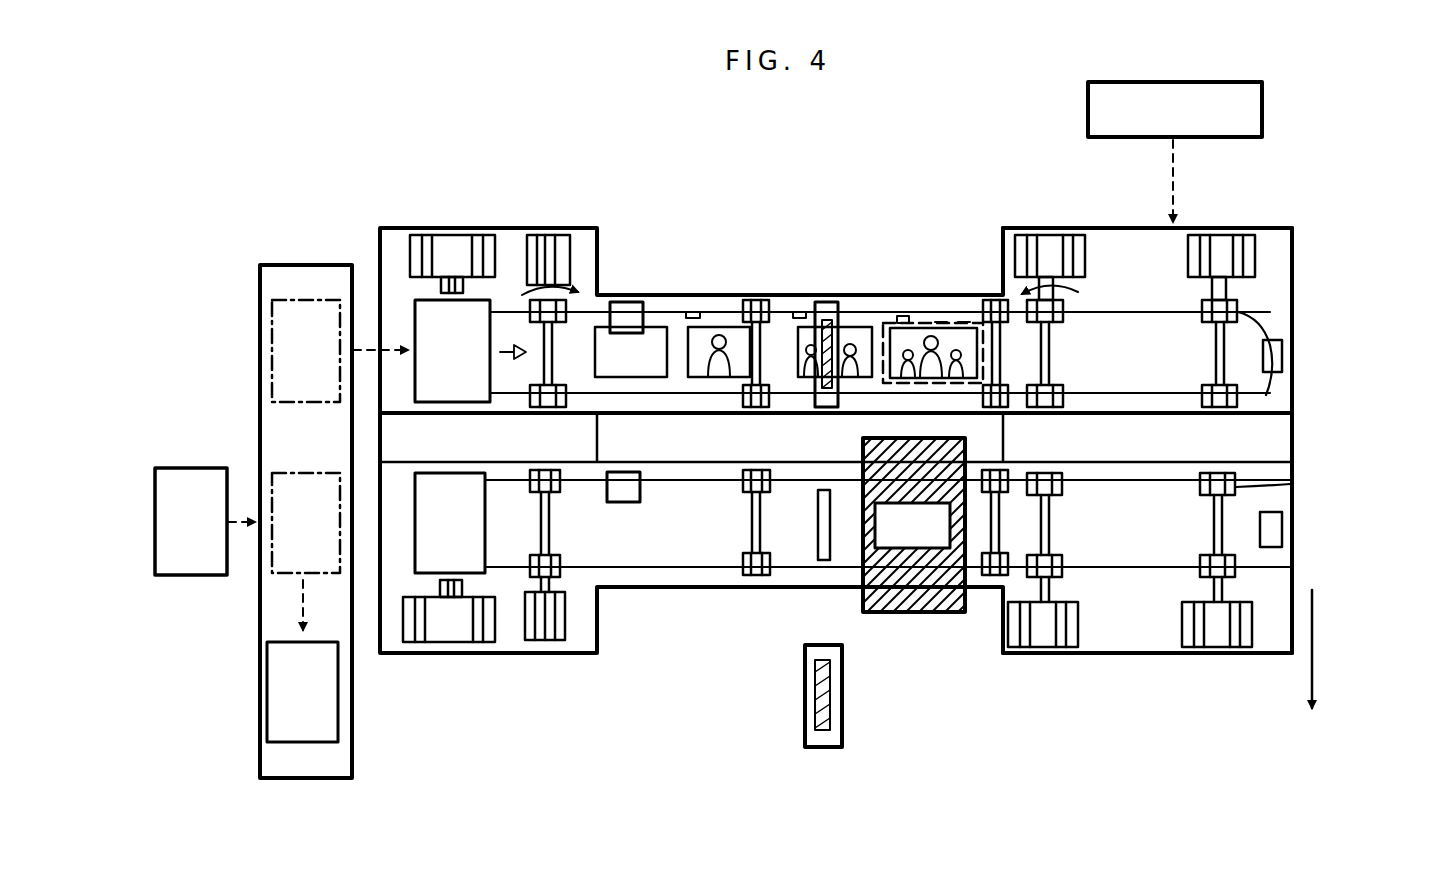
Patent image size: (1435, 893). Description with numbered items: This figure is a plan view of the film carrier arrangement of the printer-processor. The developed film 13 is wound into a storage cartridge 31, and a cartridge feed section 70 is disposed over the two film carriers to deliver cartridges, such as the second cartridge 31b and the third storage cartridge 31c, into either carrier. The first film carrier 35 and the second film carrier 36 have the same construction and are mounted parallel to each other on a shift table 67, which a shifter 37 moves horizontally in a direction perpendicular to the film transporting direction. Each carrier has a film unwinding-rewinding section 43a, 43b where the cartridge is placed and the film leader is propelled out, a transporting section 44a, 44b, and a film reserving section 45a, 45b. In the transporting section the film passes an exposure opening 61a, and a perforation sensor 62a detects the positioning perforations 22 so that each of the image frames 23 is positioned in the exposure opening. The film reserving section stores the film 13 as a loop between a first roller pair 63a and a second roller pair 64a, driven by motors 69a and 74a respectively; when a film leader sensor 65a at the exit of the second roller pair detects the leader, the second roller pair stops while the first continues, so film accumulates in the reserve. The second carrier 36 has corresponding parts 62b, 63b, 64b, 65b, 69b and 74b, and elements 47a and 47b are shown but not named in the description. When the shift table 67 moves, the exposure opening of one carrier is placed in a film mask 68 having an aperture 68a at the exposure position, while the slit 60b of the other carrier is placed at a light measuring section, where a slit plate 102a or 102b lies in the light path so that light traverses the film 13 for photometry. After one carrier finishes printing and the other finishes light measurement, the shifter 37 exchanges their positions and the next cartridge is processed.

The developed film 13 is at (668, 312).
The positioning perforations 22 is at (692, 312).
The image frames 23 is at (724, 326).
The storage cartridge 31 is at (413, 330).
The second cartridge 31b is at (270, 724).
The third storage cartridge 31c is at (197, 468).
The first film carrier 35 is at (518, 222).
The second film carrier 36 is at (607, 656).
The shifter 37 is at (1262, 110).
The film unwinding-rewinding section 43a is at (459, 232).
The film unwinding-rewinding section 43b is at (494, 657).
The transporting section 44a is at (724, 290).
The transporting section 44b is at (672, 594).
The film reserving section 45a is at (1122, 256).
The film reserving section 45b is at (1140, 652).
The motor 47a is at (427, 262).
The motor 47b is at (422, 636).
The slit 60b is at (818, 523).
The exposure opening 61a is at (920, 323).
The perforation sensor 62a is at (626, 302).
The sensor 62b is at (625, 472).
The first roller pair 63a is at (1066, 395).
The roller 63b is at (1066, 488).
The second roller pair 64a is at (1250, 310).
The guide 64b is at (1292, 484).
The film leader sensor 65a is at (1283, 357).
The stopper 65b is at (1283, 530).
The shift table 67 is at (1282, 434).
The film mask 68 is at (890, 598).
The aperture 68a is at (948, 530).
The motor 69a is at (1040, 242).
The motor 69b is at (1042, 648).
The cartridge feed section 70 is at (297, 265).
The motor 74a is at (1229, 242).
The motor roller 74b is at (1222, 648).
The slit plate 102a is at (826, 302).
The slit plate 102b is at (842, 738).